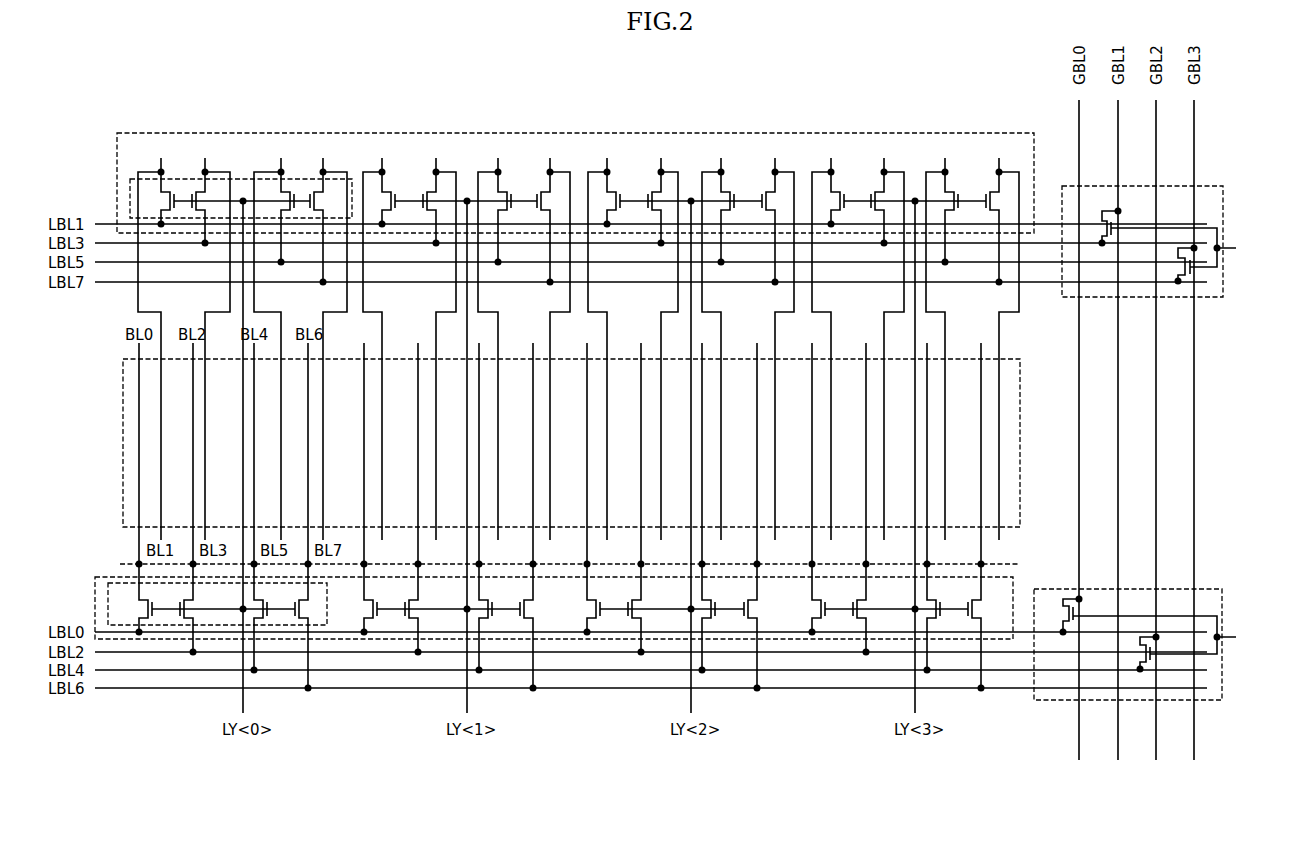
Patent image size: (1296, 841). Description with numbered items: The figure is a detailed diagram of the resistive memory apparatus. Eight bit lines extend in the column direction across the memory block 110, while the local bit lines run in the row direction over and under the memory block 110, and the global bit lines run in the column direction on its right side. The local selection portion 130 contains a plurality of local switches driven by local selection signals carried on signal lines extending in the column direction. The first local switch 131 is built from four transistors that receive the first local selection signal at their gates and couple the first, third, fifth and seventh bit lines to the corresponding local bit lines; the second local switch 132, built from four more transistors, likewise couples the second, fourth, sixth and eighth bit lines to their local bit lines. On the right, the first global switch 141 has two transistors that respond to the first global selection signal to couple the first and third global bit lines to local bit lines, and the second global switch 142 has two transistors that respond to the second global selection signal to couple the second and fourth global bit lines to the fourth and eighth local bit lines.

The memory block 110 is at (1020, 400).
The local selection portion 130 is at (1003, 133).
The first local switch 131 is at (320, 607).
The second local switch 132 is at (300, 179).
The first global switch 141 is at (1208, 589).
The second global switch 142 is at (1205, 186).